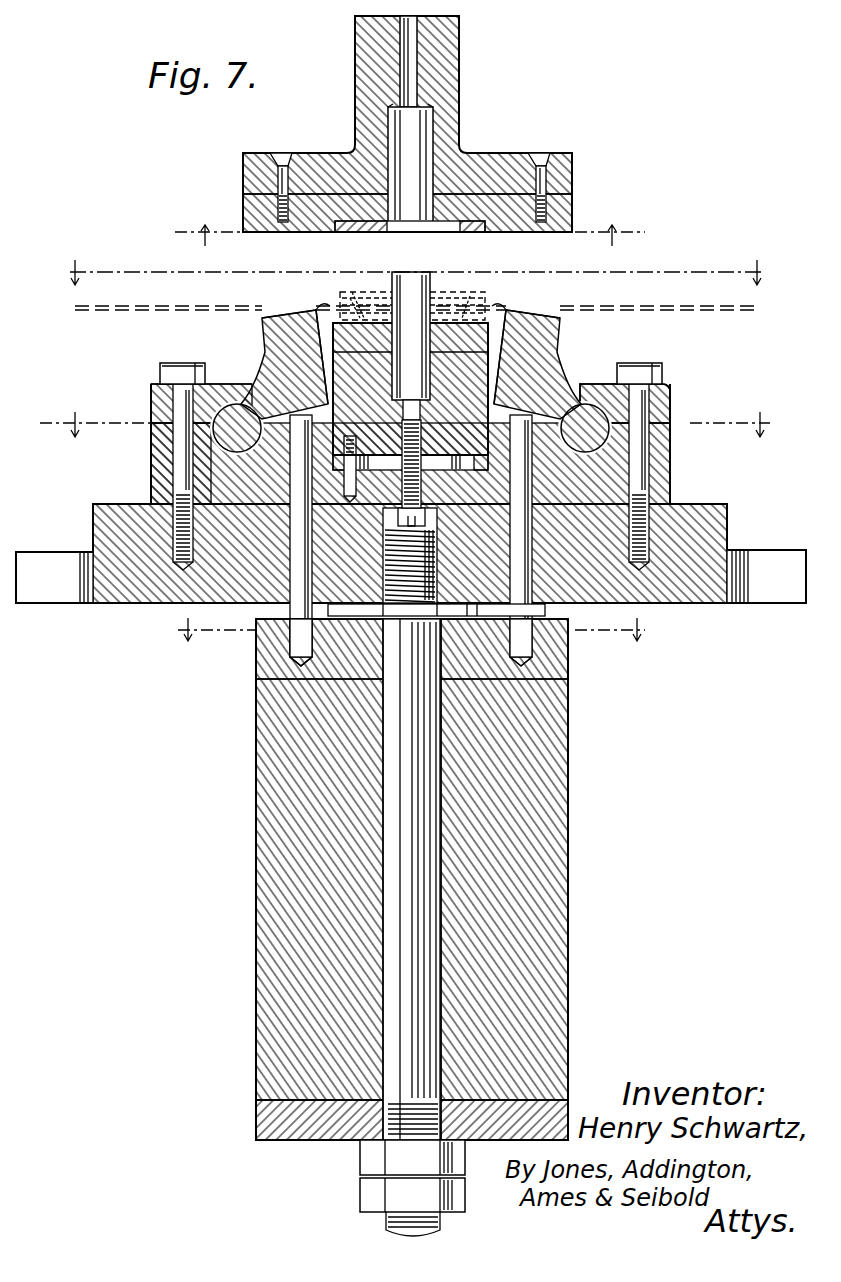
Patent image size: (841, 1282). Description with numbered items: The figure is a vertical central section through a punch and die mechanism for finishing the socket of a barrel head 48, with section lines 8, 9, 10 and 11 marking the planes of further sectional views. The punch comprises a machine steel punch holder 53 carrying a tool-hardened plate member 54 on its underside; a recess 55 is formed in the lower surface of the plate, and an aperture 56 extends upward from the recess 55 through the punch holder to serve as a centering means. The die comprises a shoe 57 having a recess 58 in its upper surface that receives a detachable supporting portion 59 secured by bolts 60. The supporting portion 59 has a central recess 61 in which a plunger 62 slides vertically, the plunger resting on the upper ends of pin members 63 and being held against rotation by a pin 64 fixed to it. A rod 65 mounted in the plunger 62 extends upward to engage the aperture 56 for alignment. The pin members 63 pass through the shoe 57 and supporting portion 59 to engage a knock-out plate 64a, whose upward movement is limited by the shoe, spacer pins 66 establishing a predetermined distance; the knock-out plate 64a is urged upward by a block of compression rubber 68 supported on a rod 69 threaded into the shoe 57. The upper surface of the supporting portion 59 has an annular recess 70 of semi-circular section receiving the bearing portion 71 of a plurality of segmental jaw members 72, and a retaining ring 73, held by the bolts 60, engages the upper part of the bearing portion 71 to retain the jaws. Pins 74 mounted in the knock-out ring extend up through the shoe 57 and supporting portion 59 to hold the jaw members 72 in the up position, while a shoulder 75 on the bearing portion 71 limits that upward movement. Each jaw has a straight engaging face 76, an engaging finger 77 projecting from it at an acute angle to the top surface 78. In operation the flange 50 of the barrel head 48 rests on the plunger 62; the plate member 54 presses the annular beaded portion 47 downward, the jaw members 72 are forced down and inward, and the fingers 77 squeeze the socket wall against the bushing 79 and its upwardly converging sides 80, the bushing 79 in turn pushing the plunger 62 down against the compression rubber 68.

The annular beaded portion 47 is at (340, 298).
The barrel head 48 is at (702, 300).
The flange 50 is at (410, 355).
The punch holder 53 is at (574, 168).
The plate member 54 is at (574, 212).
The recess 55 is at (456, 232).
The aperture 56 is at (418, 130).
The shoe 57 is at (708, 522).
The recess 58 is at (670, 500).
The detachable supporting portion 59 is at (160, 438).
The bolts 60 is at (182, 484).
The central recess 61 is at (572, 392).
The plunger 62 is at (552, 358).
The pin members 63 is at (548, 613).
The pin 64 is at (350, 466).
The knock-out plate 64a is at (566, 680).
The rod 65 is at (412, 280).
The pins 66 is at (296, 650).
The block of compression rubber 68 is at (552, 760).
The rod 69 is at (432, 836).
The annular recess 70 is at (168, 462).
The bearing portion 71 is at (178, 398).
The segmental jaw members 72 is at (252, 368).
The retaining ring 73 is at (662, 384).
The pins 74 is at (296, 576).
The shoulder 75 is at (240, 412).
The engaging faces 76 is at (266, 323).
The engaging finger 77 is at (324, 304).
The top surface 78 is at (318, 310).
The bushing 79 is at (364, 300).
The upwardly converging sides 80 is at (471, 289).
The section line 8- 8 is at (407, 238).
The section line 9- 9 is at (416, 272).
The section line 10- 10 is at (421, 417).
The section line 11- 11 is at (420, 632).